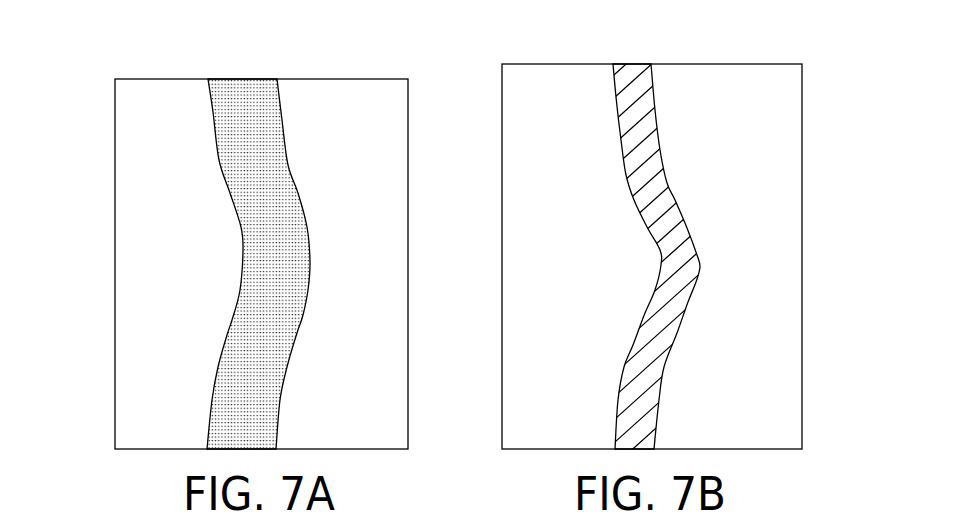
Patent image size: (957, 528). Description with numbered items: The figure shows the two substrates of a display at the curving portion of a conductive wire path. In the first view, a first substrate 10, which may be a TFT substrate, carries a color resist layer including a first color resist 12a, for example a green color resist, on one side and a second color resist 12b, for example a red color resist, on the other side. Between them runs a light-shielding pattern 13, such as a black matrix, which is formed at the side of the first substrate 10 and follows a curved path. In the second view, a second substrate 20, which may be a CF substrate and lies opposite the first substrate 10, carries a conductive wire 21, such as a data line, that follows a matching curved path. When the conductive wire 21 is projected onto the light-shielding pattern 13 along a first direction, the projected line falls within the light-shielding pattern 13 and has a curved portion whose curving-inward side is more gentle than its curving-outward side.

In FIG. 7A, the first substrate 10 is at (162, 76).
In FIG. 7A, the first color resist 12a is at (137, 183).
In FIG. 7A, the second color resist 12b is at (377, 168).
In FIG. 7A, the light-shielding pattern 13 is at (244, 88).
In FIG. 7B, the second substrate 20 is at (808, 256).
In FIG. 7B, the conductive wire 21 is at (633, 78).